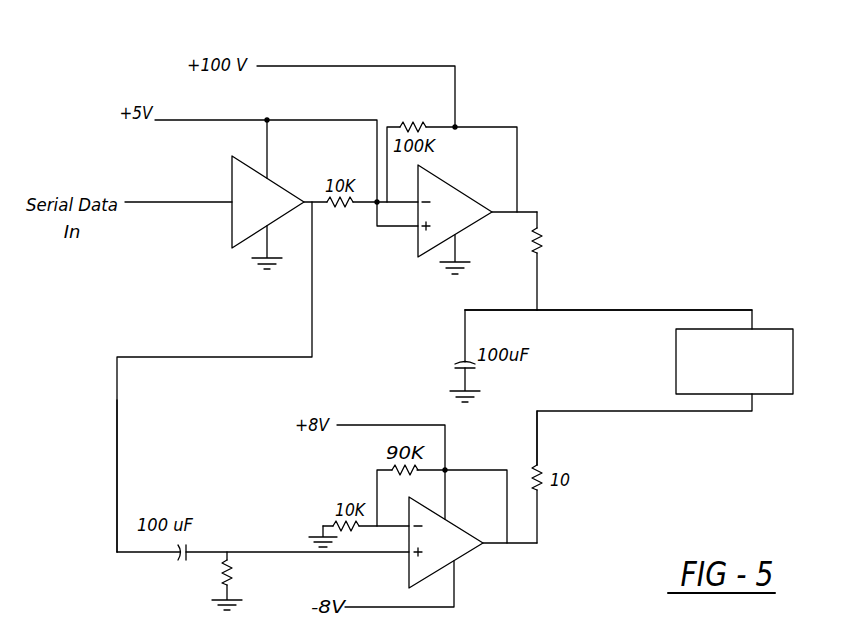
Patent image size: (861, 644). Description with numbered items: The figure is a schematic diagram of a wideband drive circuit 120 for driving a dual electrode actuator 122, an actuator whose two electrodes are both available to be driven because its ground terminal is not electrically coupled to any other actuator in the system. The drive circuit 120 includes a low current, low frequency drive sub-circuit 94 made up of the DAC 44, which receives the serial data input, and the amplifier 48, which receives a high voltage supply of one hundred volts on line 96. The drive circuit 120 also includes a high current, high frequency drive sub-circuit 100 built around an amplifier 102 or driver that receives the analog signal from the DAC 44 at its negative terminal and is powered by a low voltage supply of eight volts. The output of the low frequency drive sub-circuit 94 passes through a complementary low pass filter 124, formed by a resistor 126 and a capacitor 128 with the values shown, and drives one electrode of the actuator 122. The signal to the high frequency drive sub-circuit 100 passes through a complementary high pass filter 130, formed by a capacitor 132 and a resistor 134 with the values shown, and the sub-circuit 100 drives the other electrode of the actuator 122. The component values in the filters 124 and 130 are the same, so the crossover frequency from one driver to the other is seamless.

The DAC 44 is at (232, 231).
The amplifier 48 is at (415, 243).
The low current, low frequency drive sub-circuit 94 is at (533, 106).
The high voltage supply line 96 is at (357, 66).
The high current, high frequency drive sub-circuit 100 is at (554, 518).
The amplifier 102 is at (468, 552).
The wideband drive circuit 120 is at (633, 130).
The actuator 122 is at (780, 329).
The complementary low pass filter 124 is at (575, 283).
The resistor 126 is at (540, 222).
The capacitor 128 is at (458, 366).
The complementary high pass filter 130 is at (148, 566).
The capacitor 132 is at (184, 550).
The resistor 134 is at (222, 574).